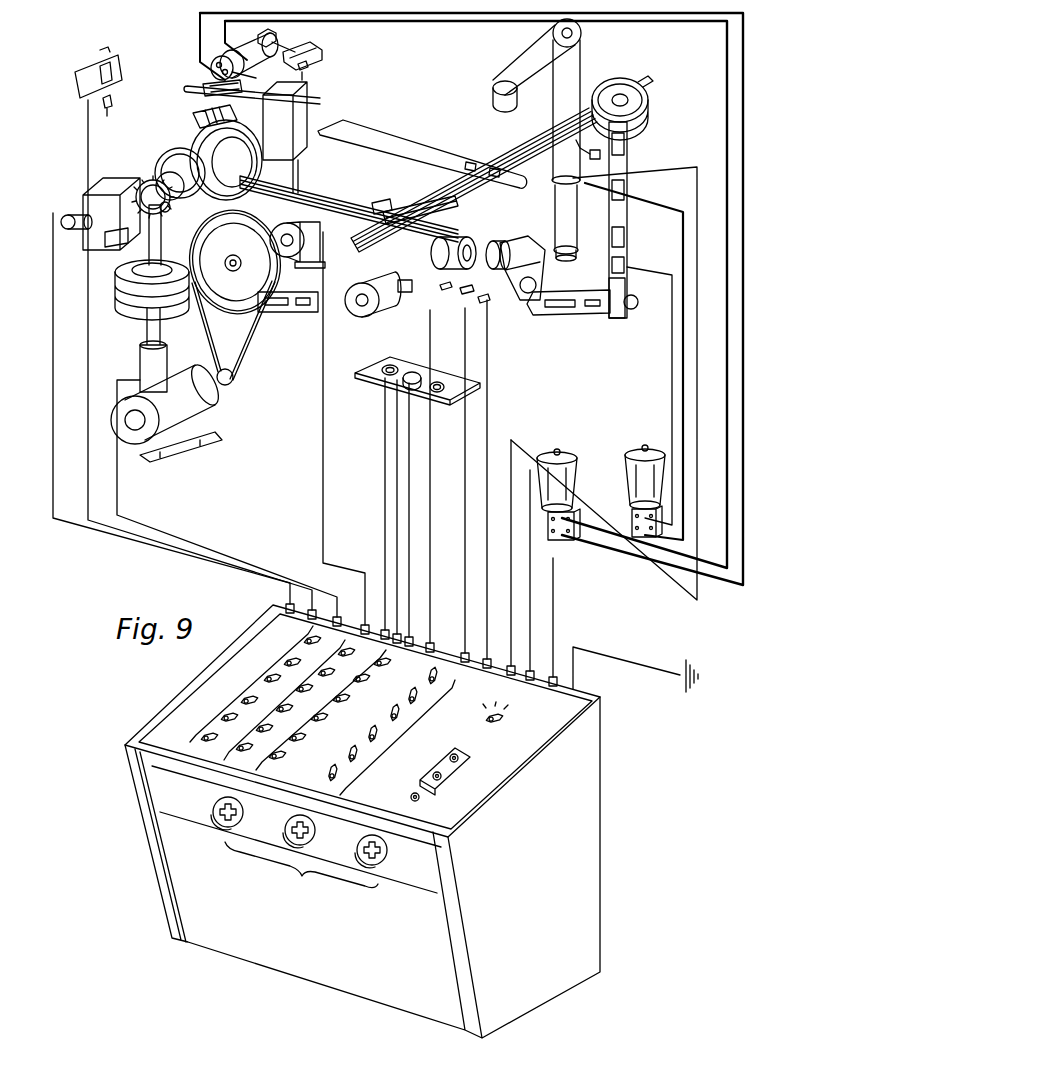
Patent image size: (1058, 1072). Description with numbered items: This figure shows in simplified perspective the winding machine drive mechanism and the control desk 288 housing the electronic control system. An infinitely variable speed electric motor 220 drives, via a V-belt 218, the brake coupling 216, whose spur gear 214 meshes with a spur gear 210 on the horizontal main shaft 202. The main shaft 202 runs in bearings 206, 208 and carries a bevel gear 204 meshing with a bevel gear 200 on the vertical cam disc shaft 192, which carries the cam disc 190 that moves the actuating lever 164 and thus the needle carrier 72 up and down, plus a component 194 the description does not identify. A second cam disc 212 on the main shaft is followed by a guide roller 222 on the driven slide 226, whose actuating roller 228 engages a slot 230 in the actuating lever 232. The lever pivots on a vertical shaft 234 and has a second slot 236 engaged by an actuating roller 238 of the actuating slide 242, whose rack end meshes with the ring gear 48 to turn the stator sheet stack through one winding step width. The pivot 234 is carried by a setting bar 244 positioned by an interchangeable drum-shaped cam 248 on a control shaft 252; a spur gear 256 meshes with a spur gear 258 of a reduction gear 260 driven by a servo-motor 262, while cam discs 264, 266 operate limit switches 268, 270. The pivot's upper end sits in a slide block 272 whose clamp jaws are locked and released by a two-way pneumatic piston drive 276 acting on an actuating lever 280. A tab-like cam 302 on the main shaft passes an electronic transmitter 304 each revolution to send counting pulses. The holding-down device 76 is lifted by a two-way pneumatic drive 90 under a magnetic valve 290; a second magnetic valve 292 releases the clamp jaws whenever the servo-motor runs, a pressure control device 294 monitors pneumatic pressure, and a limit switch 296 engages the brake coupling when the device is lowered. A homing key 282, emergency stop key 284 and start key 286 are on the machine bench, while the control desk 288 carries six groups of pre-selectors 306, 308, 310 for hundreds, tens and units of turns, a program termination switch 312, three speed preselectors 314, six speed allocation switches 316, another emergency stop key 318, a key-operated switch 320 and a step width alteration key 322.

The ring gear 48 is at (648, 113).
The needle carrier 72 is at (628, 198).
The holding-down device 76 is at (591, 51).
The two-way pneumatic drive 90 is at (571, 208).
The actuating lever 164 is at (290, 313).
The cam disc 190 is at (135, 312).
The vertical cam disc shaft 192 is at (162, 244).
The coupling 194 is at (140, 370).
The bevel gear 200 is at (168, 211).
The horizontal main shaft 202 is at (146, 184).
The bevel gear 204 is at (160, 178).
The bearing 206 is at (85, 193).
The bearing 208 is at (307, 97).
The spur gear 210 is at (161, 160).
The second cam disc 212 is at (191, 140).
The spur gear 214 is at (322, 243).
The electro-magnetically actuatable brake coupling 216 is at (250, 227).
The V-belt 218 is at (242, 353).
The infinitely variable speed electric motor 220 is at (210, 439).
The guide roller 222 is at (196, 119).
The driven slide 226 is at (244, 71).
The actuating roller 228 is at (198, 94).
The slot 230 is at (210, 85).
The actuating lever 232 is at (372, 134).
The vertical shaft 234 is at (308, 70).
The second slot 236 is at (468, 162).
The actuating roller 238 is at (494, 167).
The actuating slide 242 is at (508, 148).
The setting bar 244 is at (362, 206).
The drum-shaped cam 248 is at (441, 289).
The control shaft 252 is at (465, 237).
The spur gear 256 is at (420, 208).
The spur gear 258 is at (382, 203).
The reduction gear 260 is at (404, 294).
The servo-motor 262 is at (365, 318).
The cam disc 264 is at (522, 240).
The cam disc 266 is at (495, 241).
The limit switch 268 is at (474, 294).
The limit switch 270 is at (488, 301).
The slide block 272 is at (322, 55).
The two-way pneumatic piston drive 276 is at (218, 60).
The actuating lever 280 is at (280, 40).
The homing key 282 is at (391, 365).
The emergency stop key 284 is at (415, 372).
The start key 286 is at (440, 382).
The control desk 288 is at (592, 790).
The magnetic valve 290 is at (648, 452).
The second magnetic valve 292 is at (562, 455).
The pressure control device 294 is at (118, 57).
The limit switch 296 is at (594, 160).
The tab-like cam 302 is at (107, 245).
The electronic transmitter 304 is at (72, 230).
The pre-selectors 306 is at (262, 675).
The pre-selectors 308 is at (300, 686).
The pre-selectors 310 is at (338, 695).
The program termination switch 312 is at (505, 714).
The speed preselectors 314 is at (299, 845).
The speed allocation switches 316 is at (400, 748).
The emergency stop key 318 is at (420, 798).
The key-operated switch 320 is at (460, 758).
The step width alteration key 322 is at (442, 777).